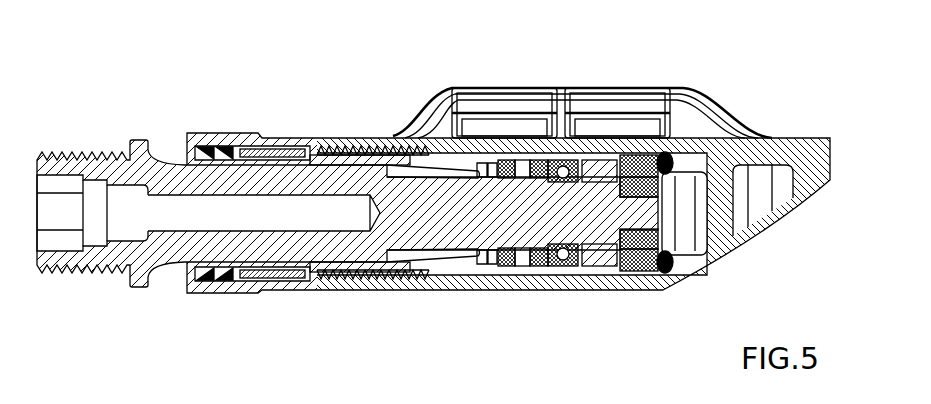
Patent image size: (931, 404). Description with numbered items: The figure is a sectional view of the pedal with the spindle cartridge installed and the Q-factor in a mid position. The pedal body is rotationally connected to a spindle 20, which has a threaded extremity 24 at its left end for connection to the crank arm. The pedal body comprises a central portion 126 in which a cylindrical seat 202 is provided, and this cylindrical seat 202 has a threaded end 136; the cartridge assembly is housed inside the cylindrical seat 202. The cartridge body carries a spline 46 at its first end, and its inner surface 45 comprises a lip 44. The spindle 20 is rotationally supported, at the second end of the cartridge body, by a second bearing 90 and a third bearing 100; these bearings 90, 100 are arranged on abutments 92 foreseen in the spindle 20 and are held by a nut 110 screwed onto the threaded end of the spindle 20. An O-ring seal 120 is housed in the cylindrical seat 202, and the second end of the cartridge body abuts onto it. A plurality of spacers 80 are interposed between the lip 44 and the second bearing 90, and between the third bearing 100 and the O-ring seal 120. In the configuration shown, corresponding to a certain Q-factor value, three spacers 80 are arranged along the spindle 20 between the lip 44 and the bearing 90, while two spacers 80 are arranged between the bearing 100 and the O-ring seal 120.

The spindle 20 is at (183, 178).
The threaded extremity 24 is at (88, 273).
The lip 44 is at (489, 150).
The inner surface 45 is at (450, 140).
The spline 46 is at (225, 293).
The spacers 80 is at (641, 145).
The second bearing 90 is at (567, 287).
The abutments 92 is at (603, 145).
The third bearing 100 is at (597, 288).
The nut 110 is at (747, 190).
The O-ring seal 120 is at (683, 157).
The central portion 126 is at (337, 138).
The threaded end 136 is at (387, 165).
The cylindrical seat 202 is at (455, 252).